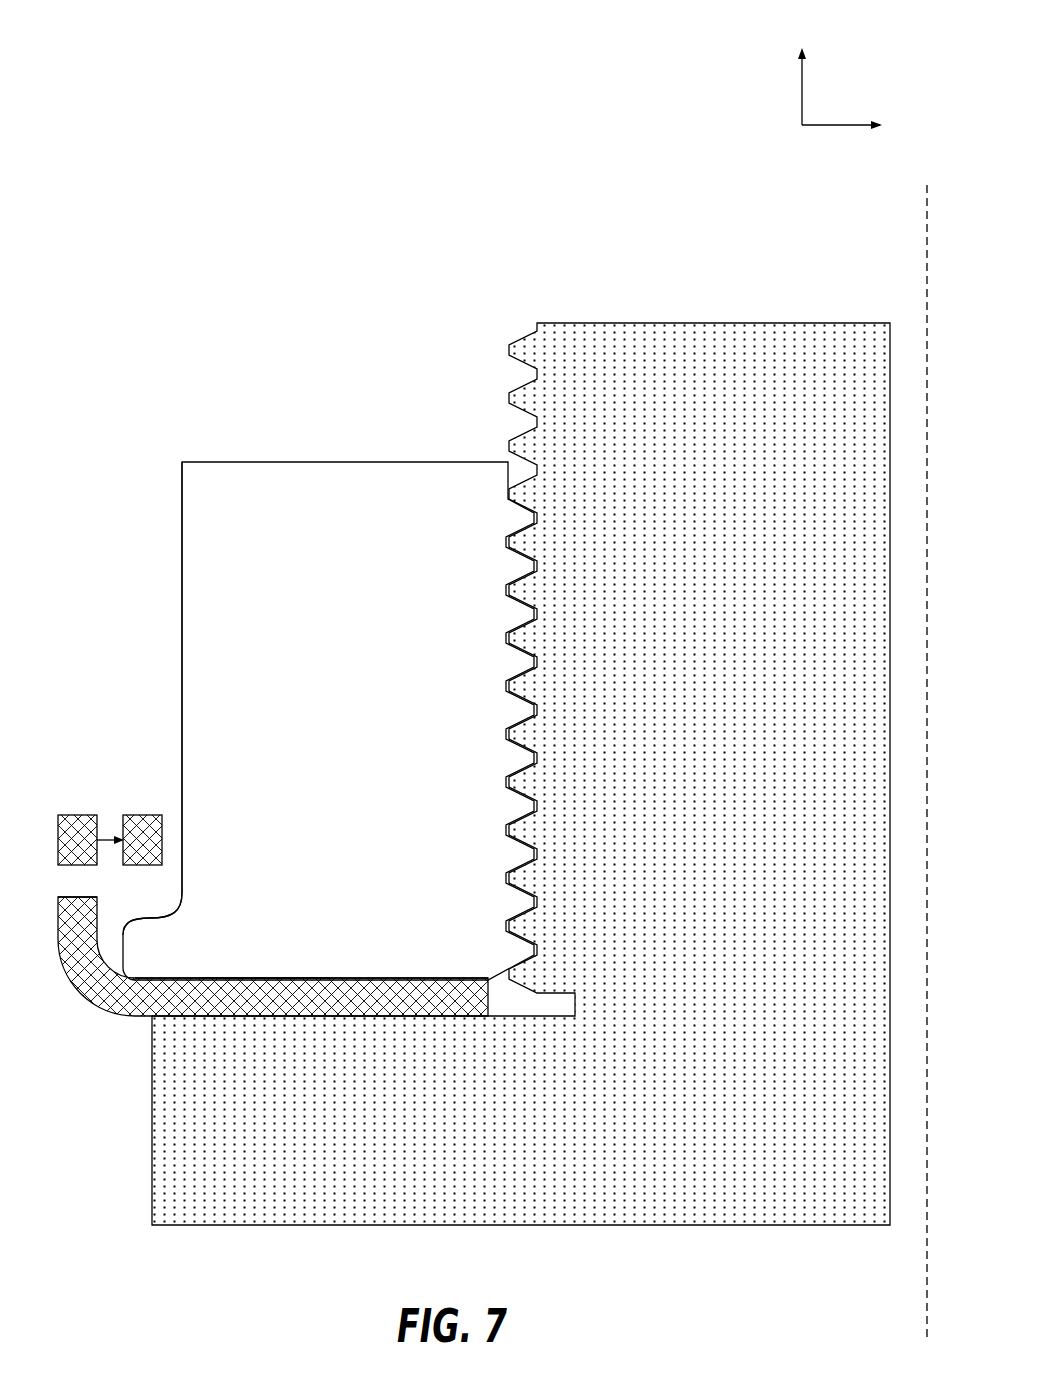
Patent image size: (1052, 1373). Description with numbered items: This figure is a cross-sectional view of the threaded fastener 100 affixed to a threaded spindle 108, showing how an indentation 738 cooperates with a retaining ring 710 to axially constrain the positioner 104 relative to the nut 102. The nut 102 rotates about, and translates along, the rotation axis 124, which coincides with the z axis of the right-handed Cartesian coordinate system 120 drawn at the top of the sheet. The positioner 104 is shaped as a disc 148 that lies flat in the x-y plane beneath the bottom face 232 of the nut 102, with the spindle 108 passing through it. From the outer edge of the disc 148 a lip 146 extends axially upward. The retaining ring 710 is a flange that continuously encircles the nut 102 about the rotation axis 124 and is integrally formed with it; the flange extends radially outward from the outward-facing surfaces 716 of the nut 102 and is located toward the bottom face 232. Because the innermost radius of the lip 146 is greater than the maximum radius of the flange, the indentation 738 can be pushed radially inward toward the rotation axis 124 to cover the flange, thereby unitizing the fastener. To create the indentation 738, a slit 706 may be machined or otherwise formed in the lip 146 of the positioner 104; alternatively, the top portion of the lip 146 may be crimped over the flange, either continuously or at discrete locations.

The threaded fastener 100 is at (128, 80).
The nut 102 is at (304, 462).
The positioner 104 is at (93, 1005).
The threaded spindle 108 is at (694, 323).
The Cartesian coordinate system 120 is at (860, 50).
The rotation axis 124 is at (927, 291).
The lip 146 is at (30, 762).
The disc 148 is at (322, 977).
The bottom face 232 is at (262, 968).
The slit 706 is at (67, 881).
The retaining ring 710 is at (178, 957).
The outward-facing surfaces 716 is at (172, 641).
The indentation 738 is at (77, 815).